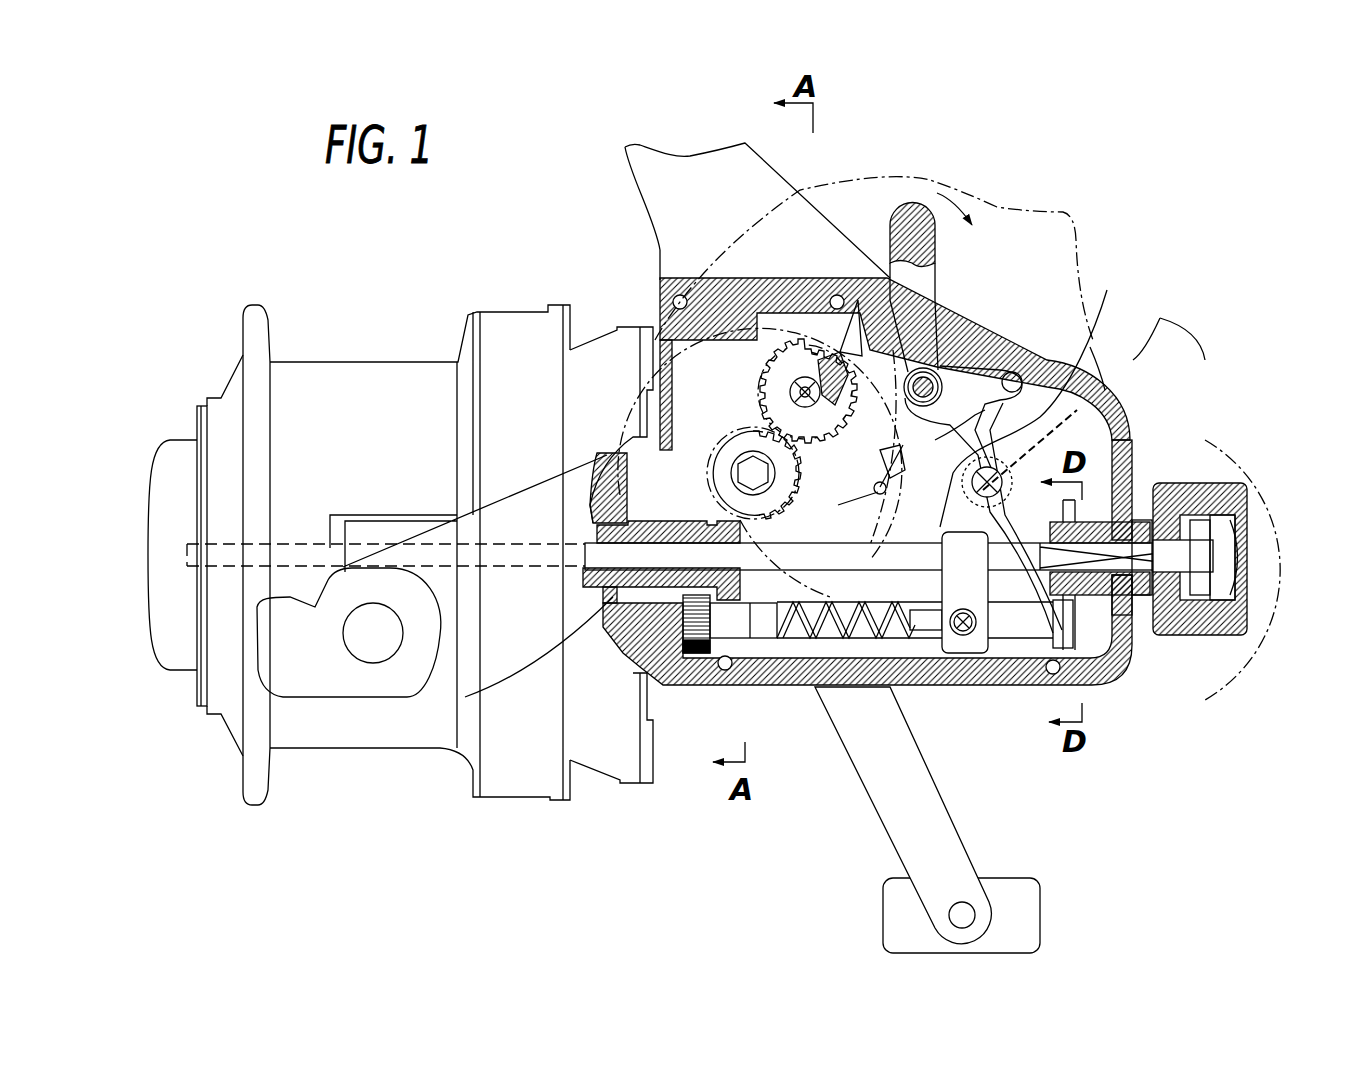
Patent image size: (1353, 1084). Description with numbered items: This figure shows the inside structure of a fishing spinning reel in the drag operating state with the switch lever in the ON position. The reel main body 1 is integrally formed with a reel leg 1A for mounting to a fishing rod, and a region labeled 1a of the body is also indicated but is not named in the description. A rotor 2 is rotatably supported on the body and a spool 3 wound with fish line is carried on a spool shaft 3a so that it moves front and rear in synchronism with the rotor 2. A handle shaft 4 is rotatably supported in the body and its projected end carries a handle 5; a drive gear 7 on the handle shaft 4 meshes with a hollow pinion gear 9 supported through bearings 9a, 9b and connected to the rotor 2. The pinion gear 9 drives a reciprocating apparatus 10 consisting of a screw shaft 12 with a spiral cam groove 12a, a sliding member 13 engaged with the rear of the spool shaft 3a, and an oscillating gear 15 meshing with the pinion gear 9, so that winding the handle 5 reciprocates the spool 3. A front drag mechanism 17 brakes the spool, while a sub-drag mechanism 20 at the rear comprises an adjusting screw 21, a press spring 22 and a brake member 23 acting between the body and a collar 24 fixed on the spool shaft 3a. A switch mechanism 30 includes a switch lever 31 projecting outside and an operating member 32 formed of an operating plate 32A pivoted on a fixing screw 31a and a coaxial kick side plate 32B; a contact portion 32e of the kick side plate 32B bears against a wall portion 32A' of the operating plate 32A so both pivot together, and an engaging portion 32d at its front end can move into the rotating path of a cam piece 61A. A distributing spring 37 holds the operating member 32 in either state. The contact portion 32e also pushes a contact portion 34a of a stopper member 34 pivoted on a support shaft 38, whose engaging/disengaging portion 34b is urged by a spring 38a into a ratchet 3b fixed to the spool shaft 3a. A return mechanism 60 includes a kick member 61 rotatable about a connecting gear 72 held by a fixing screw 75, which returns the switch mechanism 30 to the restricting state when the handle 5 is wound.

The reel main body 1 is at (993, 683).
The reel leg 1A is at (778, 166).
The housing end circle 1a is at (1240, 494).
The rotor 2 is at (598, 356).
The spool 3 is at (381, 378).
The spool shaft 3a is at (600, 568).
The ratchet 3b is at (1080, 600).
The handle shaft 4 is at (735, 478).
The handle 5 is at (930, 803).
The drive gear 7 is at (735, 640).
The pinion gear 9 is at (667, 524).
The bearing 9a is at (603, 596).
The bearing 9b is at (740, 590).
The reciprocating apparatus 10 is at (746, 432).
The screw shaft 12 is at (794, 640).
The cam groove 12a is at (925, 668).
The sliding member 13 is at (1010, 662).
The oscillating gear 15 is at (696, 655).
The front drag mechanism 17 is at (183, 394).
The sub-drag mechanism 20 is at (1222, 466).
The adjusting screw 21 is at (1197, 634).
The press spring 22 is at (1221, 620).
The brake member 23 is at (1148, 520).
The collar 24 is at (1123, 584).
The switch mechanism 30 is at (995, 242).
The switch lever 31 is at (918, 205).
The fixing screw 31a is at (932, 372).
The operating member 32 is at (968, 375).
The operating plate 32A is at (1038, 355).
The wall portion 32A' is at (981, 422).
The kick side plate 32B is at (903, 452).
The engaging portion 32d is at (877, 536).
The contact portion 32e is at (1100, 320).
The stopper member 34 is at (1008, 472).
The contact portion 34a is at (965, 592).
The engaging/disengaging portion 34b is at (1128, 445).
The distributing spring 37 is at (890, 482).
The support shaft 38 is at (1110, 362).
The spring 38a is at (1138, 362).
The return mechanism 60 is at (711, 325).
The kick member 61 is at (827, 360).
The cam piece 61A is at (854, 286).
The connecting gear 72 is at (770, 383).
The fixing screw 75 is at (802, 378).